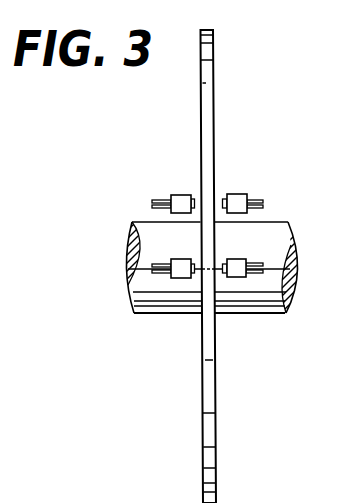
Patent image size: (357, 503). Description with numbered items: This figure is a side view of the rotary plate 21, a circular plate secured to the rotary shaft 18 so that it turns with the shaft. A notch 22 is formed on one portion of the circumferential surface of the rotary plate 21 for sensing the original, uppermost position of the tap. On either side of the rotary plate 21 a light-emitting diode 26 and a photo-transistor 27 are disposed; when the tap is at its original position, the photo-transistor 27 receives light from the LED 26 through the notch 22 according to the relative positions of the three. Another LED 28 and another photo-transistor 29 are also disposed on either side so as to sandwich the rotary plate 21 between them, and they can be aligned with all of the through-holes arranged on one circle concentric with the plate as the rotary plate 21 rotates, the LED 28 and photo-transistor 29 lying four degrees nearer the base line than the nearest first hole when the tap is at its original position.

The rotary shaft 18 is at (287, 241).
The rotary plate 21 is at (207, 107).
The notch 22 is at (208, 266).
The light-emitting diode 26 is at (236, 272).
The photo-transistor 27 is at (180, 276).
The LED 28 is at (238, 202).
The photo-transistor 29 is at (177, 199).